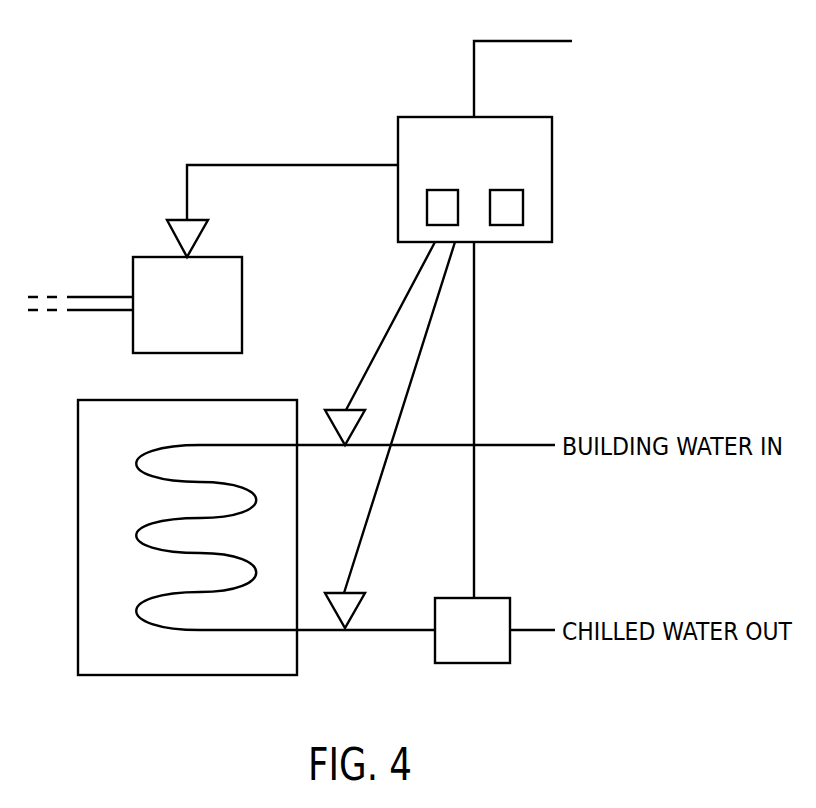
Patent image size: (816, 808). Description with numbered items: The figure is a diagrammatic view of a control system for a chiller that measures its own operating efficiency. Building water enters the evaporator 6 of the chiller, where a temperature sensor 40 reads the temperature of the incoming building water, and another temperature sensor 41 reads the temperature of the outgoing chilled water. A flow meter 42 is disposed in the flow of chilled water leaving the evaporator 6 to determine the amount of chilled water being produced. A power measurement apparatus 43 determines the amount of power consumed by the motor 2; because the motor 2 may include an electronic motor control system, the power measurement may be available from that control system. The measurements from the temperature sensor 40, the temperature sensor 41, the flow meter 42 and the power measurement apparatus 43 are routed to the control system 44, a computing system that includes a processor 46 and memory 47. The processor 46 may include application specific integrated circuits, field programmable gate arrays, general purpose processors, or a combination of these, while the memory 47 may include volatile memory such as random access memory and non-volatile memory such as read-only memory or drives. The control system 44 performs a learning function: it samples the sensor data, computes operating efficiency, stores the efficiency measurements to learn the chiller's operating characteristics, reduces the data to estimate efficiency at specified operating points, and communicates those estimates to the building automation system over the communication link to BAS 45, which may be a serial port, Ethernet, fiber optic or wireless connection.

The motor 2 is at (133, 272).
The evaporator 6 is at (78, 537).
The temperature sensor 40 is at (338, 424).
The temperature sensor 41 is at (338, 606).
The flow meter 42 is at (472, 663).
The power measurement apparatus 43 is at (178, 215).
The control system 44 is at (552, 180).
The communication link to BAS 45 is at (615, 63).
The processor 46 is at (427, 207).
The memory 47 is at (523, 208).